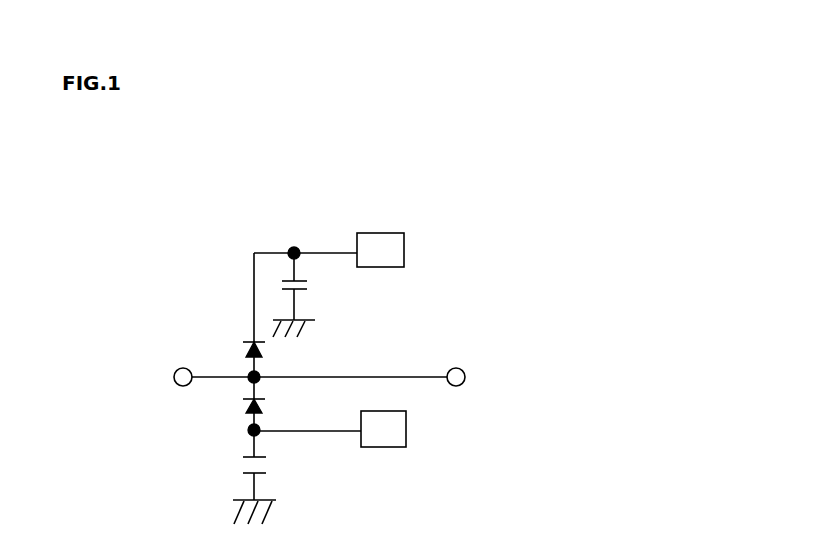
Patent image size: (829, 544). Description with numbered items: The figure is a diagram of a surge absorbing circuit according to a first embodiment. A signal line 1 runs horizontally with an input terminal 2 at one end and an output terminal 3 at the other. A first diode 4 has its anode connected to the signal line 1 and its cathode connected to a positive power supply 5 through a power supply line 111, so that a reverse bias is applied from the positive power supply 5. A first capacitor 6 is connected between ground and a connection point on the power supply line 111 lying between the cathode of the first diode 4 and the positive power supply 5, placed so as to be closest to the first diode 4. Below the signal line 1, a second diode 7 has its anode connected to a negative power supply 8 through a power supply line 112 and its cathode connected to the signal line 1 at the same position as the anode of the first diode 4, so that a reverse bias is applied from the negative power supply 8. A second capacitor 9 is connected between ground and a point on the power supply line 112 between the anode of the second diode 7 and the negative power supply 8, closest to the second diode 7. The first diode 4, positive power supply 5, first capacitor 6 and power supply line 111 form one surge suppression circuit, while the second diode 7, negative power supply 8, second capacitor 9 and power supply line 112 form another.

The signal line 1 is at (397, 365).
The input terminal 2 is at (172, 362).
The output terminal 3 is at (462, 362).
The first diode 4 is at (232, 325).
The positive power supply 5 is at (400, 227).
The first capacitor 6 is at (302, 290).
The second diode 7 is at (242, 415).
The negative power supply 8 is at (390, 453).
The second capacitor 9 is at (276, 473).
The power supply line 111 is at (322, 250).
The power supply line 112 is at (302, 436).